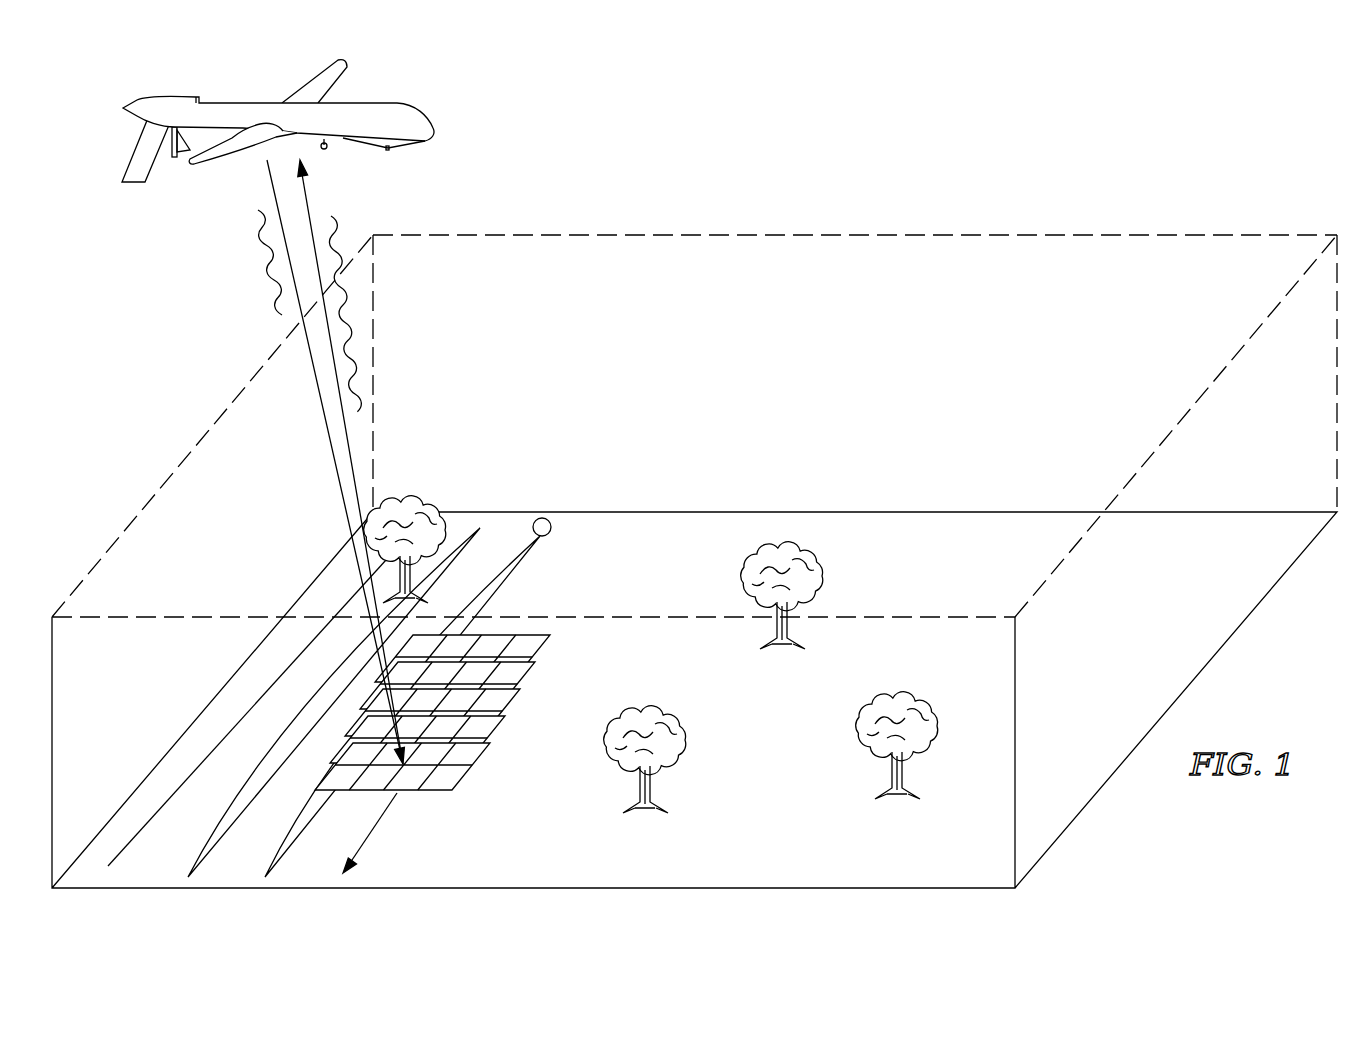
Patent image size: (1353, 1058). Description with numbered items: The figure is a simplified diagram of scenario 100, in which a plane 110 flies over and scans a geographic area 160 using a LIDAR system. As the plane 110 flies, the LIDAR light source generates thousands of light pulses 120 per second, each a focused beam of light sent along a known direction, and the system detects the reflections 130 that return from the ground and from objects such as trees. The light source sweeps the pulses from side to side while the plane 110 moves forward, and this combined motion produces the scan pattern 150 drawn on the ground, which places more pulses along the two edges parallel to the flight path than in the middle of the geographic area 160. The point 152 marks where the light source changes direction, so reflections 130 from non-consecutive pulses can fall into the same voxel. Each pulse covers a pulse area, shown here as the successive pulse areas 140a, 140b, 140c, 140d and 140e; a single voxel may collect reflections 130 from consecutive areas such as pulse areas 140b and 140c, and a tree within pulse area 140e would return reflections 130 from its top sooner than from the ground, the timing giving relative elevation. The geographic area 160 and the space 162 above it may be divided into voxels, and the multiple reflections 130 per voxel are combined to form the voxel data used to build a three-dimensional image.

The scenario 100 is at (694, 474).
The plane 110 is at (248, 106).
The light pulses 120 is at (324, 414).
The reflections 130 is at (307, 203).
The pulse area 140a is at (538, 652).
The pulse area 140b is at (522, 680).
The pulse area 140c is at (507, 708).
The pulse area 140d is at (500, 733).
The pulse area 140e is at (467, 777).
The scan pattern 150 is at (527, 568).
The point 152 is at (551, 528).
The geographic area 160 is at (893, 512).
The space 162 is at (862, 235).